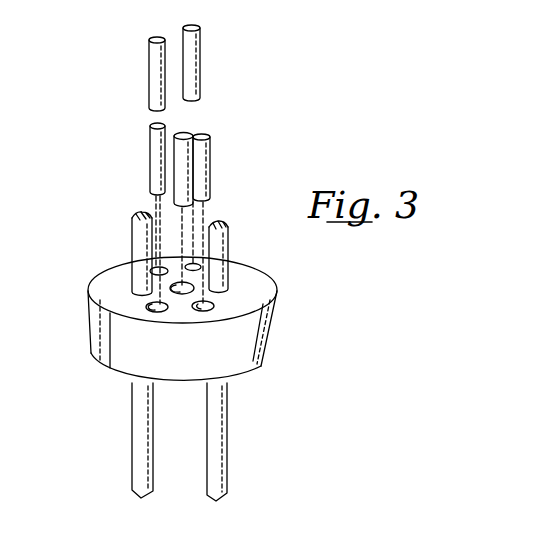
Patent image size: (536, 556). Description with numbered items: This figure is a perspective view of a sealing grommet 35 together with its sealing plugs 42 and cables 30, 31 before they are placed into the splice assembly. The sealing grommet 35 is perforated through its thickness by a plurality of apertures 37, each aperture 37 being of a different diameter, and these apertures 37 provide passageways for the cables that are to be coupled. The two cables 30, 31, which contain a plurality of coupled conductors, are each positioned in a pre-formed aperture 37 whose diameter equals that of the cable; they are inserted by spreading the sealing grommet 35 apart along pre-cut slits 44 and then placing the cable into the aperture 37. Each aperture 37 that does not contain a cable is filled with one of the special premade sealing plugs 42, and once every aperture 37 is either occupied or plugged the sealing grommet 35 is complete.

The cable 30 is at (135, 245).
The cable 31 is at (227, 250).
The sealing grommet 35 is at (283, 278).
The aperture 37 is at (143, 309).
The sealing plug 42 is at (203, 145).
The slit 44 is at (108, 329).